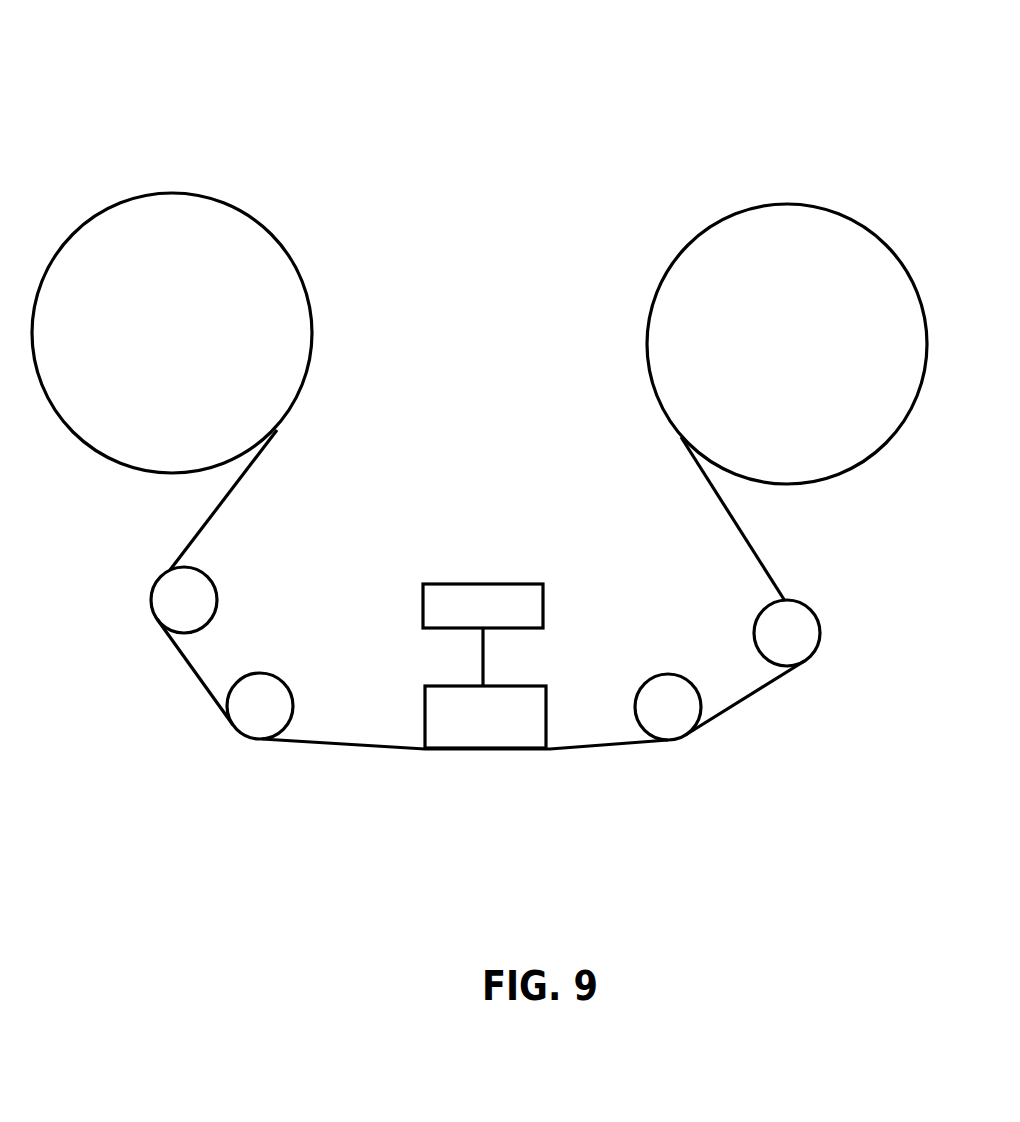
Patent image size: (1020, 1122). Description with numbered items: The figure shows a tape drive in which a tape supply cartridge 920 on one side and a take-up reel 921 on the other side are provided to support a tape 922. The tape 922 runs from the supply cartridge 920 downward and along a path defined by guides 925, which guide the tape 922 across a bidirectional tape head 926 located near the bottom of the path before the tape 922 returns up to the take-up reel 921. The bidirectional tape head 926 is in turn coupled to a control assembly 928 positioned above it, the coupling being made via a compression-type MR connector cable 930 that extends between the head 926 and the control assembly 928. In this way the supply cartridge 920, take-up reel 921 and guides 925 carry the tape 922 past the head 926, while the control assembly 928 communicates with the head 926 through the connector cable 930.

The tape supply cartridge 920 is at (172, 193).
The take-up reel 921 is at (787, 204).
The tape 922 is at (342, 748).
The guides 925 is at (217, 598).
The bidirectional tape head 926 is at (548, 717).
The control assembly 928 is at (482, 583).
The compression-type MR connector cable 930 is at (483, 668).